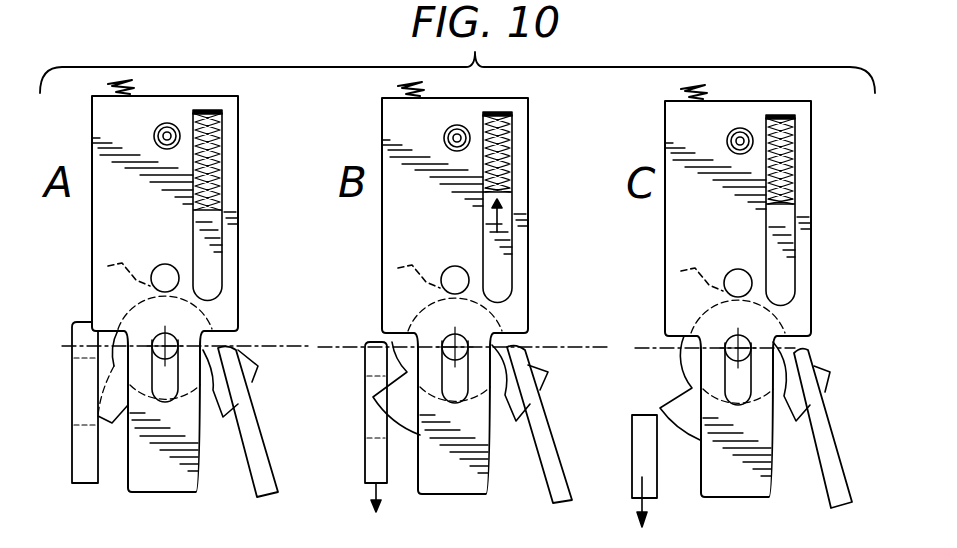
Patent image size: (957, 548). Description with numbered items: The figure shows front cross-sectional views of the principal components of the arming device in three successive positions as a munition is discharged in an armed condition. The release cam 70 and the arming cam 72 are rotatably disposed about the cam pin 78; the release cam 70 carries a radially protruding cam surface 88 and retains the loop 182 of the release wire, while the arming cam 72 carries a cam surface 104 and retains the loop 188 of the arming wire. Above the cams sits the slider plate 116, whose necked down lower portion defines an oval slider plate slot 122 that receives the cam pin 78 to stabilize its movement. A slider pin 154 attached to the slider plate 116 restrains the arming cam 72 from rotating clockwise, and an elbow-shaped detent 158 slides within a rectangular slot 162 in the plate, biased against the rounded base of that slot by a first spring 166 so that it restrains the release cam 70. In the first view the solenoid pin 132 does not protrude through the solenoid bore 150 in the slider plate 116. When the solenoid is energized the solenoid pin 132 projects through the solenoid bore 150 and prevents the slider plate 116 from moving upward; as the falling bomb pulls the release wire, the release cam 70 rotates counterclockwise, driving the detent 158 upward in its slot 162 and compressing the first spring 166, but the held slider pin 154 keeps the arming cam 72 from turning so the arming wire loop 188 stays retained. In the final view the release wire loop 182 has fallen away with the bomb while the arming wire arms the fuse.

The release cam 70 is at (390, 334).
The arming cam 72 is at (506, 347).
The cam pin 78 is at (168, 340).
The cam surface 88 is at (232, 294).
The cam surface 104 is at (110, 277).
The slider plate 116 is at (148, 492).
The slider plate slot 122 is at (158, 400).
The solenoid pin 132 is at (154, 138).
The solenoid bore 150 is at (168, 132).
The slider pin 154 is at (165, 272).
The detent 158 is at (222, 231).
The rectangular slot 162 is at (222, 122).
The first spring 166 is at (218, 146).
The loop 182 is at (76, 472).
The loop 188 is at (258, 478).